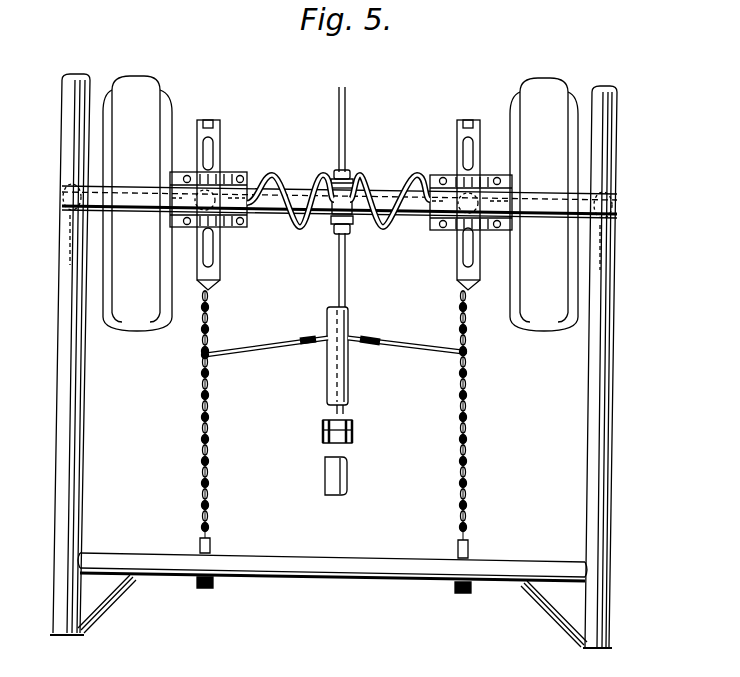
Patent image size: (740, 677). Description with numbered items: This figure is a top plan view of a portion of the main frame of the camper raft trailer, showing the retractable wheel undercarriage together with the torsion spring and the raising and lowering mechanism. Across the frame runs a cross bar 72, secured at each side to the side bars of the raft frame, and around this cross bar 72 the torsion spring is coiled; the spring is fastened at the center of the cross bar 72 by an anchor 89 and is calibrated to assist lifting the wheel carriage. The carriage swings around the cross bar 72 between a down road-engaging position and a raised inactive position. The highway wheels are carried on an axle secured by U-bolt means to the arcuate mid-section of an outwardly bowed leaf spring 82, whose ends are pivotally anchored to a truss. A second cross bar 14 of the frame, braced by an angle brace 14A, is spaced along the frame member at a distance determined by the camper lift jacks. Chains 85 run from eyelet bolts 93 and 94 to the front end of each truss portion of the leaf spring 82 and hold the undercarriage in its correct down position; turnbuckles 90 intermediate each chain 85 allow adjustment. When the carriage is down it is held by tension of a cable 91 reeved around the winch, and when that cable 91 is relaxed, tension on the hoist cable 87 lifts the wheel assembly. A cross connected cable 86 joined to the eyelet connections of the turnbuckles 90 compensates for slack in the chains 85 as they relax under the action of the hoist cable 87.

The cross bar 14 is at (332, 555).
The angle brace 14A is at (103, 600).
The cross bar 72 is at (300, 196).
The leaf spring 82 is at (221, 248).
The chains 85 is at (208, 475).
The cross connected cable 86 is at (395, 346).
The cable 87 is at (348, 404).
The anchor 89 is at (350, 226).
The turnbuckles 90 is at (208, 438).
The cable 91 is at (347, 103).
The eyelet bolt 93 is at (222, 273).
The eyelet bolt 94 is at (470, 283).